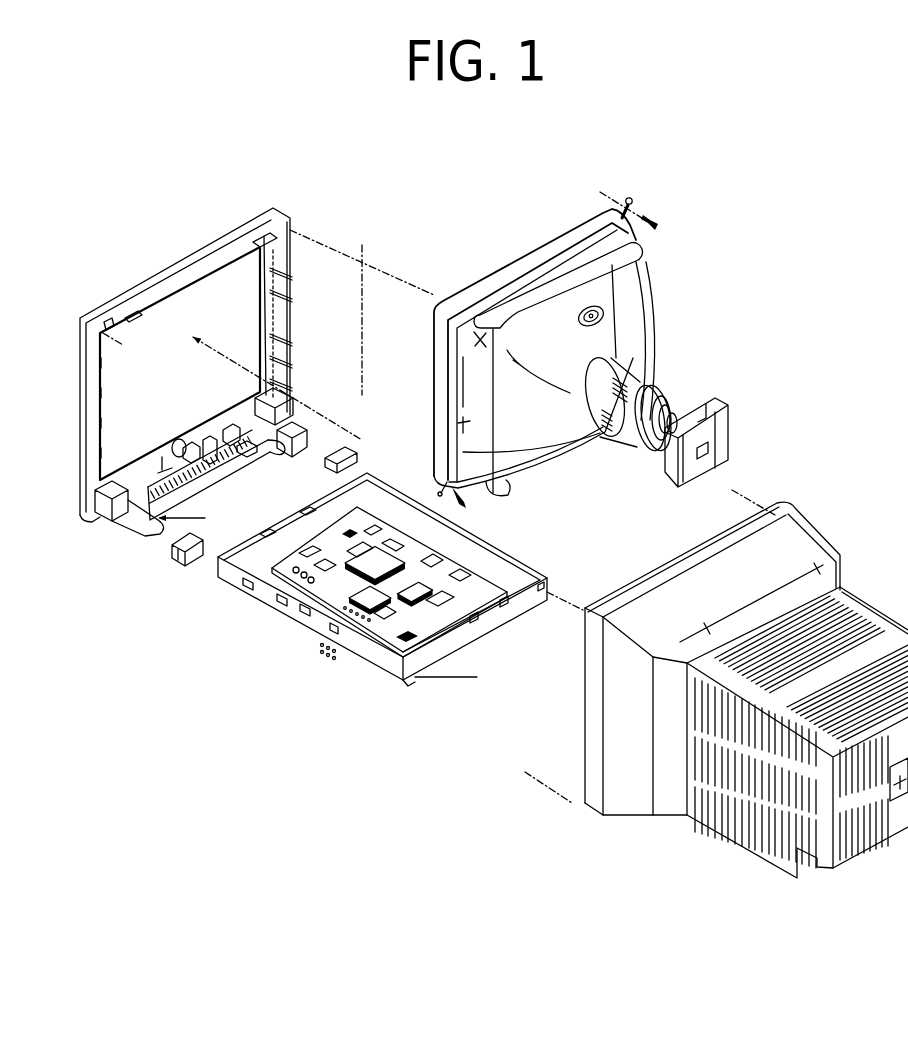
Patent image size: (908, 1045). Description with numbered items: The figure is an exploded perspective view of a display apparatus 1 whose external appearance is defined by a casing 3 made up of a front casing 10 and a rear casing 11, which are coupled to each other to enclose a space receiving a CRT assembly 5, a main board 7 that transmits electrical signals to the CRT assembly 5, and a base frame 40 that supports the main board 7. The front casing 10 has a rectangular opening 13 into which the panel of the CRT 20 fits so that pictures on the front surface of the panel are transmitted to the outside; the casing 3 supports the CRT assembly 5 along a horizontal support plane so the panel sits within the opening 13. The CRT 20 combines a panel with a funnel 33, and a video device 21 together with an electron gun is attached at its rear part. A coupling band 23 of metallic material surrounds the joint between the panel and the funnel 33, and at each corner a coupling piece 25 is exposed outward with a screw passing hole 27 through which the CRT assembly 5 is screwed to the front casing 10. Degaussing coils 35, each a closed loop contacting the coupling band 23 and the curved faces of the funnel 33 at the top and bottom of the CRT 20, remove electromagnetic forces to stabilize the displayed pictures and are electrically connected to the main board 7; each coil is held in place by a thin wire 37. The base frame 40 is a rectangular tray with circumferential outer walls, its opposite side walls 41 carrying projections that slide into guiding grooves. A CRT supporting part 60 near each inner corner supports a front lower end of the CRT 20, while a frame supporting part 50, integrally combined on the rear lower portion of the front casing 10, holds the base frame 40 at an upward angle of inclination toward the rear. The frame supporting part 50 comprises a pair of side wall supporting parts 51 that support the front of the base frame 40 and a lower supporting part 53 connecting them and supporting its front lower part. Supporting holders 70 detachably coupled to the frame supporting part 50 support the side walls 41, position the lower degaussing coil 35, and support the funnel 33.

The display apparatus 1 is at (828, 212).
The casing 3 is at (530, 853).
The CRT assembly 5 is at (688, 240).
The main board 7 is at (343, 615).
The front casing 10 is at (83, 532).
The rear casing 11 is at (571, 820).
The opening 13 is at (157, 445).
The CRT 20 is at (575, 468).
The video device 21 is at (727, 427).
The coupling band 23 is at (583, 232).
The coupling piece 25 is at (467, 497).
The screw passing hole 27 is at (637, 200).
The funnel 33 is at (650, 296).
The degaussing coil 35 is at (640, 240).
The wire 37 is at (597, 320).
The base frame 40 is at (400, 697).
The side wall 41 is at (405, 492).
The frame supporting part 50 is at (275, 488).
The side wall supporting part 51 is at (298, 452).
The lower supporting part 53 is at (222, 470).
The CRT supporting part 60 is at (257, 390).
The supporting holder 70 is at (180, 574).